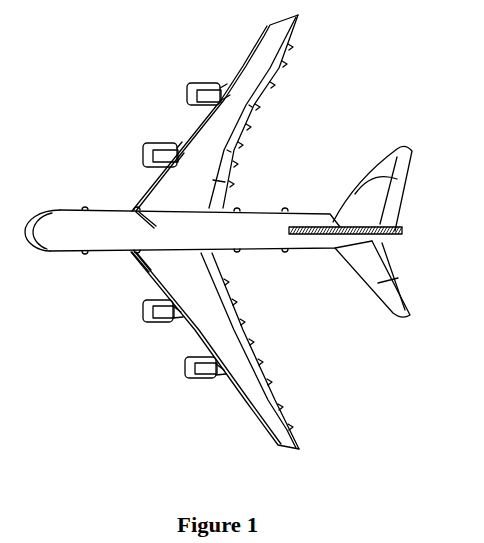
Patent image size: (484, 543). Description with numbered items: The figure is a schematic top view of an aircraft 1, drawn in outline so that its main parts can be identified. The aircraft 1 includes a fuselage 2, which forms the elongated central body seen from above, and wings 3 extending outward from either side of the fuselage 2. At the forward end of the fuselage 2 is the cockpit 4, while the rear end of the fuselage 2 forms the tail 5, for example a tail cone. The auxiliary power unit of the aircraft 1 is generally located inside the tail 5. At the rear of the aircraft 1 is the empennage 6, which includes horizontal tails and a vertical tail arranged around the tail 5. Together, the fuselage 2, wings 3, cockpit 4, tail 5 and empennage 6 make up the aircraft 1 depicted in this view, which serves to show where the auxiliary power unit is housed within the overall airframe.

The aircraft 1 is at (153, 67).
The fuselage 2 is at (137, 211).
The wings 3 is at (194, 139).
The cockpit 4 is at (57, 238).
The tail 5 is at (402, 229).
The empennage 6 is at (333, 221).